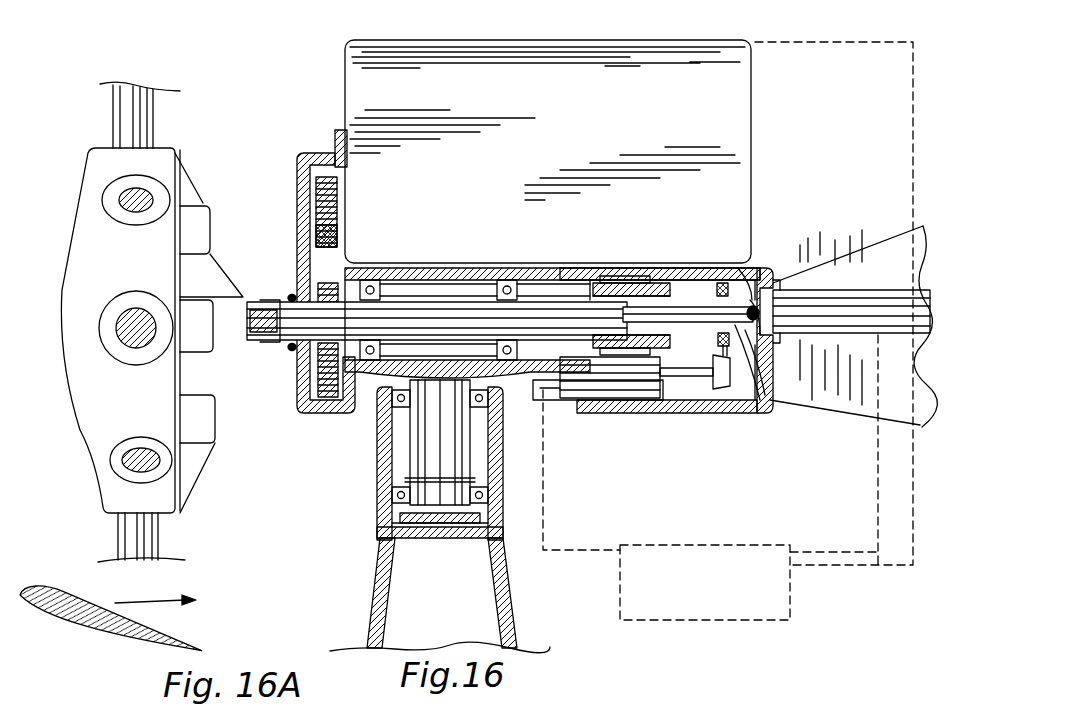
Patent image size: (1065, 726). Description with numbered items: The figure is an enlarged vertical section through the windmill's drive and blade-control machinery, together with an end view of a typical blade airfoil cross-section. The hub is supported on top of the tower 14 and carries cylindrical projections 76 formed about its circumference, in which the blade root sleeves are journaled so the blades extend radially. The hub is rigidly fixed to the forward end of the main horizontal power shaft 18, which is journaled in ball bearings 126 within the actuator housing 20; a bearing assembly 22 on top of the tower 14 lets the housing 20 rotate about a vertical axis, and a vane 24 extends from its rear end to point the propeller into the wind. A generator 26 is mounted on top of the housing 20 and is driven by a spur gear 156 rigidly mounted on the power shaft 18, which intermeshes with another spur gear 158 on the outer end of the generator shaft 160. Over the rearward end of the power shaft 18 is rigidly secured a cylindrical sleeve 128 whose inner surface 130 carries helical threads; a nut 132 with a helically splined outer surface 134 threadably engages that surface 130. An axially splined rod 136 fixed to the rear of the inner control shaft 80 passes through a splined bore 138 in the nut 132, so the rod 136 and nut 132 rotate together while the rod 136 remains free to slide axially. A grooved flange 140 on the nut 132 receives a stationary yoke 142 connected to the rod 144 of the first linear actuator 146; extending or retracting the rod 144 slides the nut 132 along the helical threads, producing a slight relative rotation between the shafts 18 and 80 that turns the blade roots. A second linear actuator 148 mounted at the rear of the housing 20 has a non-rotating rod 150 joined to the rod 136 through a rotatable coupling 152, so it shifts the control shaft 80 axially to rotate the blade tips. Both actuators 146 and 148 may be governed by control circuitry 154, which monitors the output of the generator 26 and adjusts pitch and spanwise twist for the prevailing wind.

In FIG. 16, the tower 14 is at (372, 594).
In FIG. 16, the main horizontal power shaft 18 is at (265, 352).
In FIG. 16, the actuator housing 20 is at (638, 412).
In FIG. 16, the bearing assembly 22 is at (378, 455).
In FIG. 16, the vane 24 is at (885, 250).
In FIG. 16, the generator 26 is at (600, 122).
In FIG. 16A, the cylindrical projections 76 is at (113, 212).
In FIG. 16, the control shaft 80 is at (272, 300).
In FIG. 16, the ball bearings 126 is at (493, 268).
In FIG. 16, the cylindrical sleeve 128 is at (660, 270).
In FIG. 16, the inner surface 130 is at (640, 270).
In FIG. 16, the nut 132 is at (696, 398).
In FIG. 16, the outer surface 134 is at (696, 278).
In FIG. 16, the axially splined rod 136 is at (768, 358).
In FIG. 16, the splined bore 138 is at (738, 268).
In FIG. 16, the grooved flange 140 is at (768, 382).
In FIG. 16, the yoke 142 is at (764, 412).
In FIG. 16, the rod 144 is at (684, 400).
In FIG. 16, the first linear actuator 146 is at (563, 402).
In FIG. 16, the second linear actuator 148 is at (855, 260).
In FIG. 16, the rod 150 is at (797, 268).
In FIG. 16, the rotatable coupling 152 is at (766, 268).
In FIG. 16, the control circuitry 154 is at (712, 621).
In FIG. 16, the spur gear 156 is at (325, 385).
In FIG. 16, the spur gear 158 is at (300, 152).
In FIG. 16, the generator shaft 160 is at (338, 205).